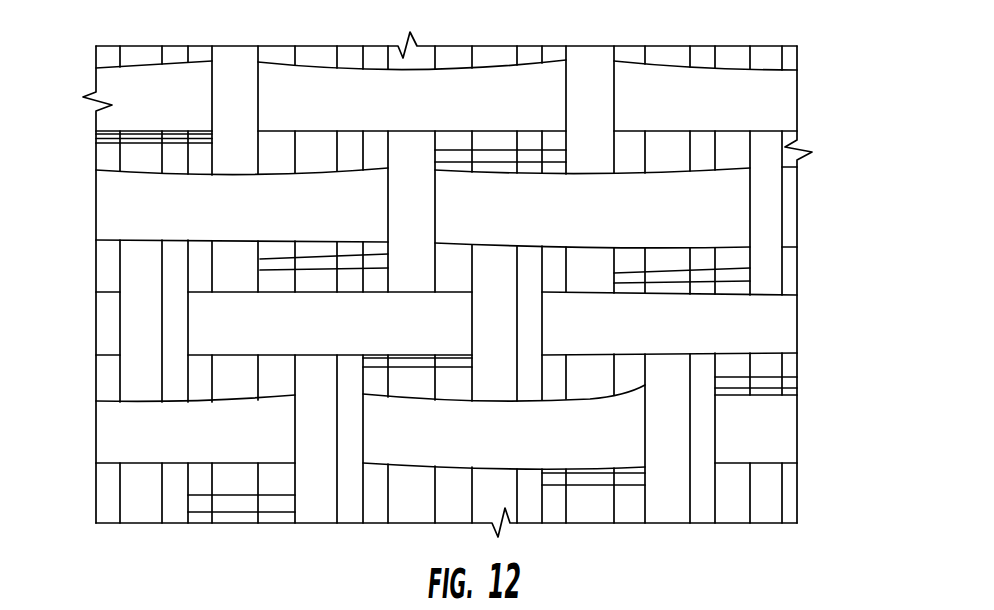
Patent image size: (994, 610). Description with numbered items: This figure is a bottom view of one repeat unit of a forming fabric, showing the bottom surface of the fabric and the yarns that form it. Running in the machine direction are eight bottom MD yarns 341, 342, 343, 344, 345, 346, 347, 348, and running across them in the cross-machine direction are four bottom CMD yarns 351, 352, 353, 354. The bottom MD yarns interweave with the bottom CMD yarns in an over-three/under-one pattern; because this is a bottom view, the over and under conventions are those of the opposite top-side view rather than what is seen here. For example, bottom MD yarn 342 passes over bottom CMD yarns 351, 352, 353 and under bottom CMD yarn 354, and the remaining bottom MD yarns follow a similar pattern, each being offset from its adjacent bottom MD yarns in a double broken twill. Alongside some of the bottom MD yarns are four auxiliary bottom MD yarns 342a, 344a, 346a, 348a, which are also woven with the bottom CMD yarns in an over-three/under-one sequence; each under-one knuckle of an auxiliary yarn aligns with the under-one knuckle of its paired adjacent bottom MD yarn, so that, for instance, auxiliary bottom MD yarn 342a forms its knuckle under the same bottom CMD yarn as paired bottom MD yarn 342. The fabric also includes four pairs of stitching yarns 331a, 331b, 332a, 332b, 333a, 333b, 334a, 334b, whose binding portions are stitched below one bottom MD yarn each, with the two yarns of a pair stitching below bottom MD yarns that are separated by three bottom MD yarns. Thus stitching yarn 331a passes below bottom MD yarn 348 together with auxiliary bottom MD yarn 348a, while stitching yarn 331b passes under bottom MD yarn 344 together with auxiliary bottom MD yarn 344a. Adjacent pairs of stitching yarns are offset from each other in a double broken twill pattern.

The stitching yarn 331a is at (105, 140).
The stitching yarn 331b is at (552, 162).
The stitching yarn 332a is at (282, 265).
The stitching yarn 332b is at (631, 282).
The stitching yarn 333a is at (452, 360).
The stitching yarn 333b is at (790, 385).
The stitching yarn 334a is at (627, 510).
The stitching yarn 334b is at (273, 505).
The bottom MD yarn 341 is at (767, 368).
The bottom MD yarn 342 is at (673, 503).
The auxiliary bottom MD yarn 342a is at (702, 503).
The bottom MD yarn 343 is at (592, 380).
The bottom MD yarn 344 is at (497, 383).
The auxiliary bottom MD yarn 344a is at (528, 333).
The bottom MD yarn 345 is at (420, 382).
The bottom MD yarn 346 is at (322, 507).
The auxiliary bottom MD yarn 346a is at (350, 507).
The bottom MD yarn 347 is at (230, 378).
The bottom MD yarn 348 is at (140, 340).
The auxiliary bottom MD yarn 348a is at (180, 348).
The bottom CMD yarn 351 is at (778, 108).
The bottom CMD yarn 352 is at (788, 222).
The bottom CMD yarn 353 is at (790, 323).
The bottom CMD yarn 354 is at (767, 437).